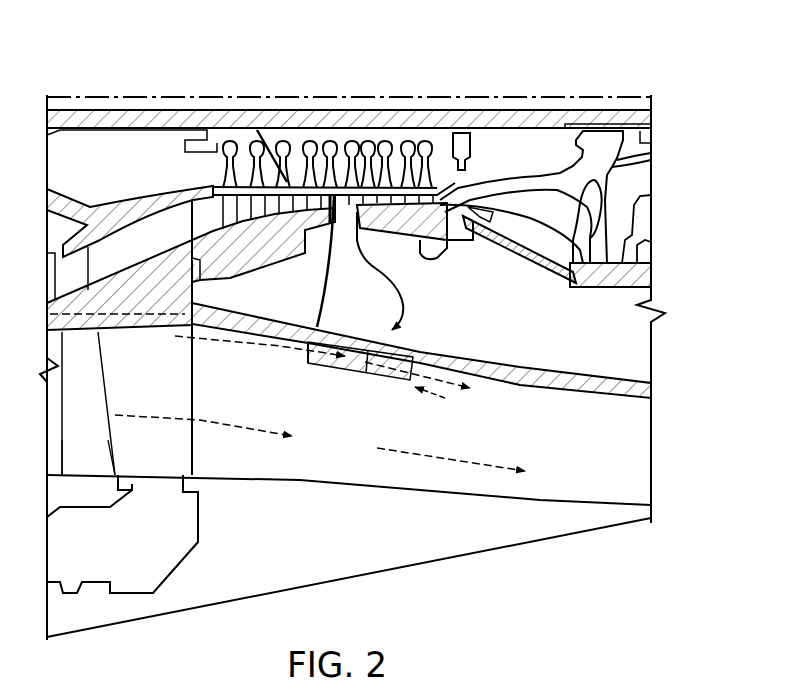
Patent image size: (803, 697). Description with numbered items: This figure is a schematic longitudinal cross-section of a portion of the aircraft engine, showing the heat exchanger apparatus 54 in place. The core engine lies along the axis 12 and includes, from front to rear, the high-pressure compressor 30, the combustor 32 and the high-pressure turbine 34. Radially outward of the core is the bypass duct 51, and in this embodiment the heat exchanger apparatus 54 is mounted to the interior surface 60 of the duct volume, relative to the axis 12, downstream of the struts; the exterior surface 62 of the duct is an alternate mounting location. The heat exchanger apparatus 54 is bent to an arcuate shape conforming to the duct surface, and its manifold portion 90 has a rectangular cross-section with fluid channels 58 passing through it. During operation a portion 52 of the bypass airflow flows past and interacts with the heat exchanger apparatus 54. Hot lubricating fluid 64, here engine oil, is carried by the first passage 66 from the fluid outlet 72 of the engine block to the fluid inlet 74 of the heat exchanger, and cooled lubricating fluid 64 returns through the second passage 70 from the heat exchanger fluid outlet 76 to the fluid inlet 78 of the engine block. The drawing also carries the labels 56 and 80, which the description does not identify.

The axis 12 is at (447, 82).
The high-pressure compressor 30 is at (268, 232).
The combustor 32 is at (520, 240).
The high-pressure turbine 34 is at (612, 272).
The bypass duct 51 is at (336, 468).
The portion of the bypass airflow 52 is at (243, 348).
The heat exchanger apparatus 54 is at (422, 392).
The bleed slot 56 is at (347, 362).
The fluid channels 58 is at (395, 273).
The interior surface 60 is at (567, 397).
The exterior surface 62 is at (530, 498).
The lubricating fluid 64 is at (325, 300).
The first passage 66 is at (357, 245).
The second passage 70 is at (327, 272).
The fluid outlet 72 is at (380, 177).
The fluid inlet 74 is at (363, 373).
The fluid outlet 76 is at (323, 366).
The fluid inlet 78 is at (332, 205).
The bleed airflow 80 is at (403, 320).
The manifold portion 90 is at (68, 333).